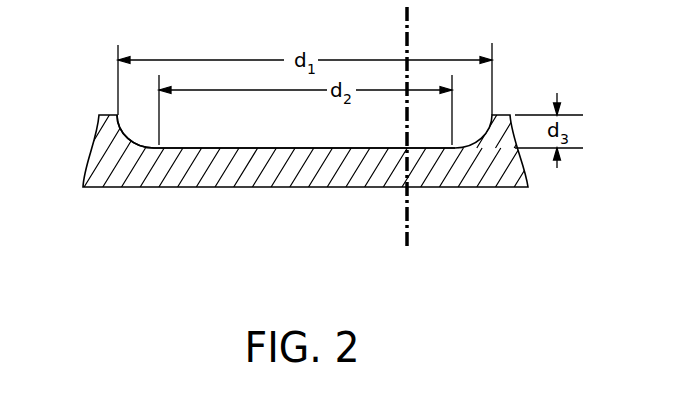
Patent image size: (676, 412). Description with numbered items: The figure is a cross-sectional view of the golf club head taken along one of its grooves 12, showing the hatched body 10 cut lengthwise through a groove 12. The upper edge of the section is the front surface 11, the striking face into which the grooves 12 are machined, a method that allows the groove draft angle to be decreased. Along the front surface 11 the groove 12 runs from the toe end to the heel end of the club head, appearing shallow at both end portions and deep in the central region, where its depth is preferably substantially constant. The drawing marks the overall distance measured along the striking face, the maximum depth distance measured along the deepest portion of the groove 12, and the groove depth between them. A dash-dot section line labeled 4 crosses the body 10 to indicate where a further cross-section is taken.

The body 10 is at (93, 167).
The front surface 11 is at (113, 114).
The groove 12 is at (252, 148).
The section line 4- 4 is at (384, 250).